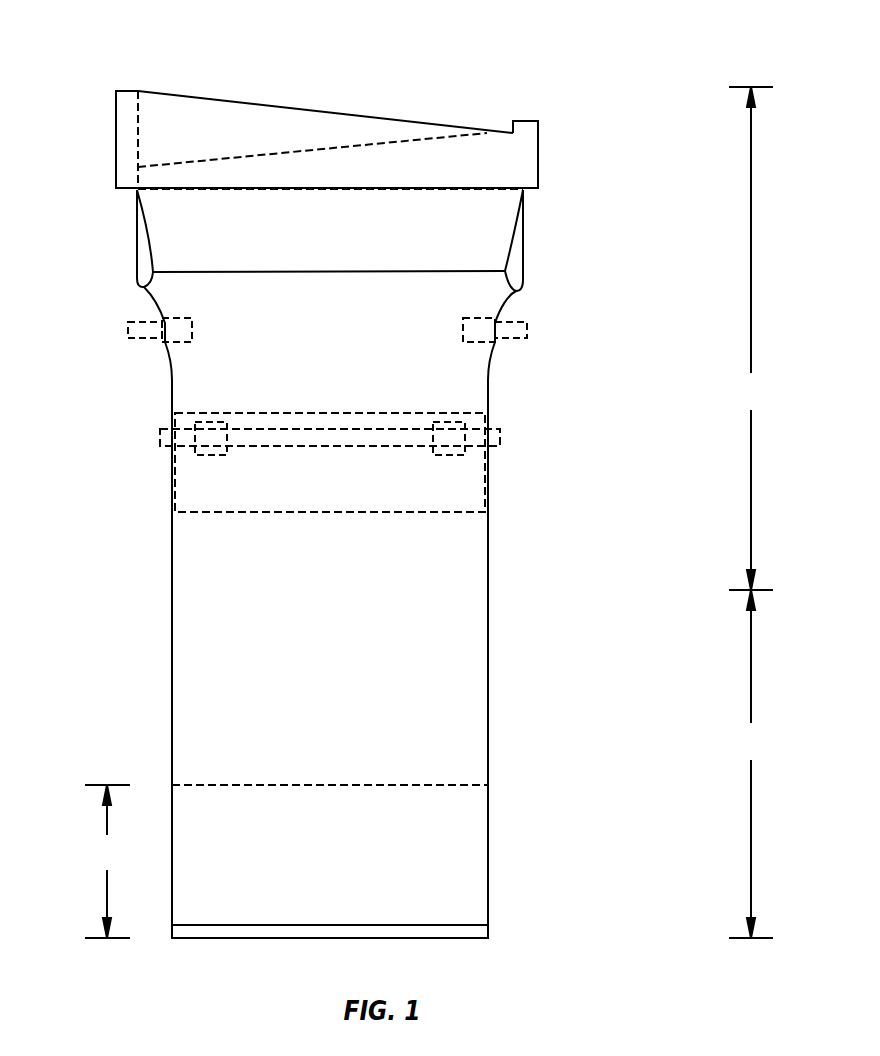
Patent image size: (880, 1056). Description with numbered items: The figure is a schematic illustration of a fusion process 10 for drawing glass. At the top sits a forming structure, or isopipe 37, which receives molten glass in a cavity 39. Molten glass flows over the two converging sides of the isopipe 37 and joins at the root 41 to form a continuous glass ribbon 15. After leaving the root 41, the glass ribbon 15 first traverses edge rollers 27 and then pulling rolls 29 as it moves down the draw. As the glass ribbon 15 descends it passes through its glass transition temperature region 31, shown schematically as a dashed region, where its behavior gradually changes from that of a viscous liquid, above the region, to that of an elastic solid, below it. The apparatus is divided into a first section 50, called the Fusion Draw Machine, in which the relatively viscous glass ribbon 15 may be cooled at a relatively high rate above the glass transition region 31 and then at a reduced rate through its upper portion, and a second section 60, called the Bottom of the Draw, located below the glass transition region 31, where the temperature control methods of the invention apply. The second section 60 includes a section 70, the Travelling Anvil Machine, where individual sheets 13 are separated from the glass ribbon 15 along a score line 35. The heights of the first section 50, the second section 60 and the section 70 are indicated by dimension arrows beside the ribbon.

The fusion process 10 is at (587, 55).
The individual sheets 13 is at (343, 906).
The glass ribbon 15 is at (102, 668).
The edge rollers 27 is at (128, 331).
The pulling rolls 29 is at (160, 438).
The glass transition temperature region 31 is at (495, 413).
The score line 35 is at (327, 786).
The forming structure (isopipe) 37 is at (480, 98).
The cavity 39 is at (200, 115).
The root 41 is at (320, 273).
The first section 50 is at (751, 338).
The second section 60 is at (751, 764).
The section (Travelling Anvil Machine) 70 is at (107, 861).